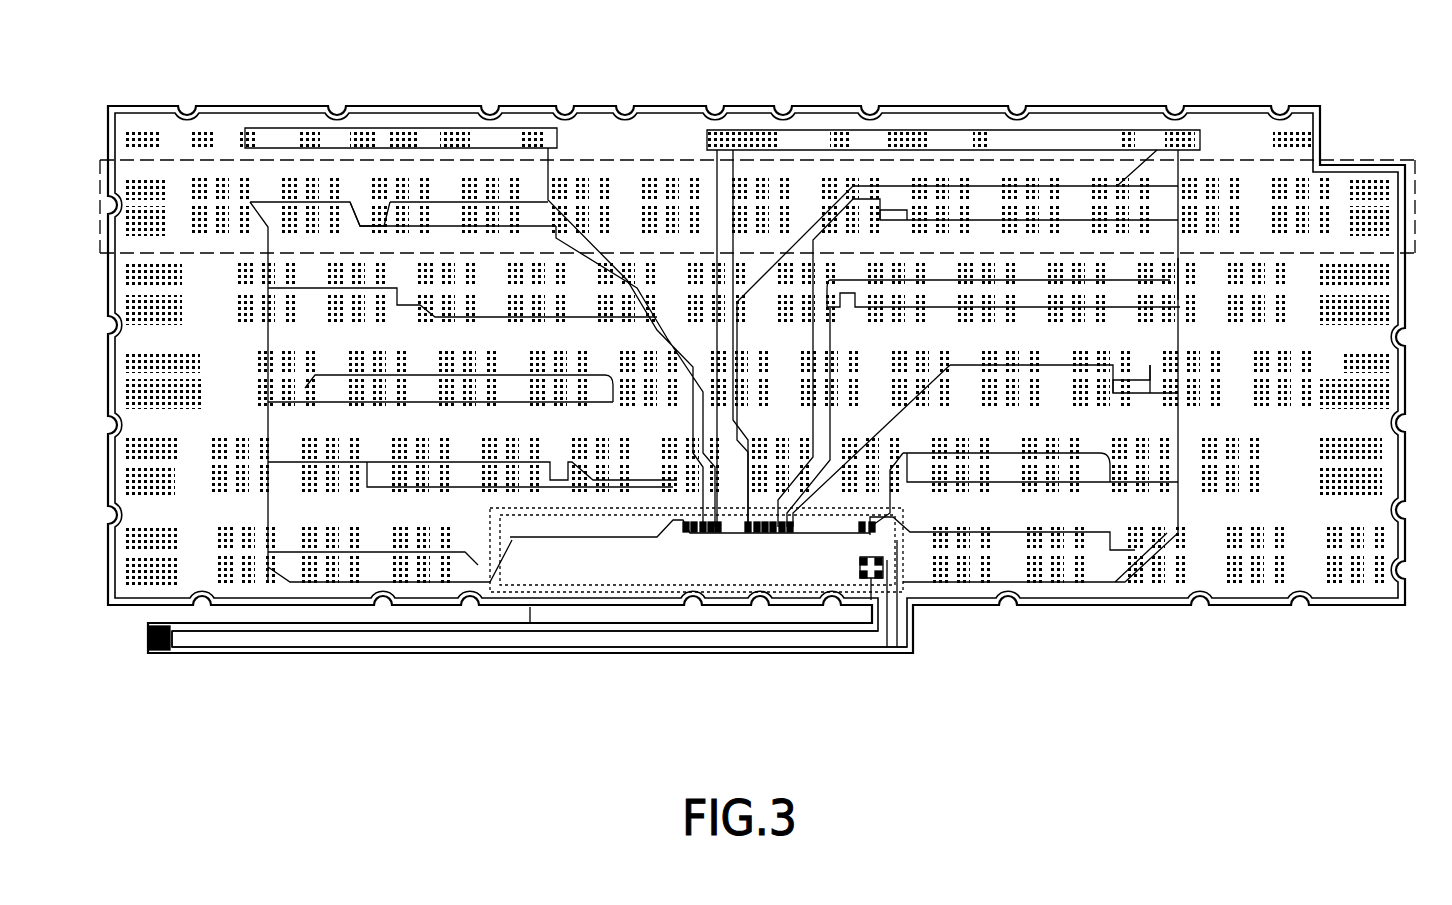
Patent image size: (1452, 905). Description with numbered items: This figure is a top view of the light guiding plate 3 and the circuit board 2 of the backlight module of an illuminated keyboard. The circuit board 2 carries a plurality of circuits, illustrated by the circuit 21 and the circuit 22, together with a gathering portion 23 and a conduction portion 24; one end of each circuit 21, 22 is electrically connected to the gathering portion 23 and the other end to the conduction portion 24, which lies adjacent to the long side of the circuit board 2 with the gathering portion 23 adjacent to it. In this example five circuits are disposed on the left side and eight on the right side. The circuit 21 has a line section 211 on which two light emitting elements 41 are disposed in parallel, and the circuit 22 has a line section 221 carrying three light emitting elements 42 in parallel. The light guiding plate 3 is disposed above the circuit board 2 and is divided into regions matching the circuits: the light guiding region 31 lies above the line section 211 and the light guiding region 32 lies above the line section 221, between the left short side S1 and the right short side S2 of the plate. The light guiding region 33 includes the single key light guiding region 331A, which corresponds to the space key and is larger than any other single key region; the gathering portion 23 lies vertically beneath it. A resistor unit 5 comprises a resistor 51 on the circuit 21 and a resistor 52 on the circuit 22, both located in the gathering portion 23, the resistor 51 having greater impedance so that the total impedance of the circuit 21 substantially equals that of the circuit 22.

The circuit board 2 is at (1178, 258).
The light guiding plate 3 is at (1130, 110).
The light guiding region 31 is at (185, 150).
The light guiding region 32 is at (1250, 152).
The circuit 21 is at (489, 310).
The line section 211 is at (270, 198).
The circuit 22 is at (958, 317).
The line section 221 is at (987, 185).
The light emitting elements 41 is at (388, 205).
The light emitting elements 42 is at (908, 207).
The resistor unit 5 is at (696, 619).
The resistor 51 is at (710, 536).
The resistor 52 is at (778, 536).
The gathering portion 23 is at (740, 536).
The conduction portion 24 is at (840, 630).
The light guiding region 33 is at (588, 598).
The single key light guiding region 331A is at (525, 618).
The side S1 is at (100, 200).
The side S2 is at (1413, 217).